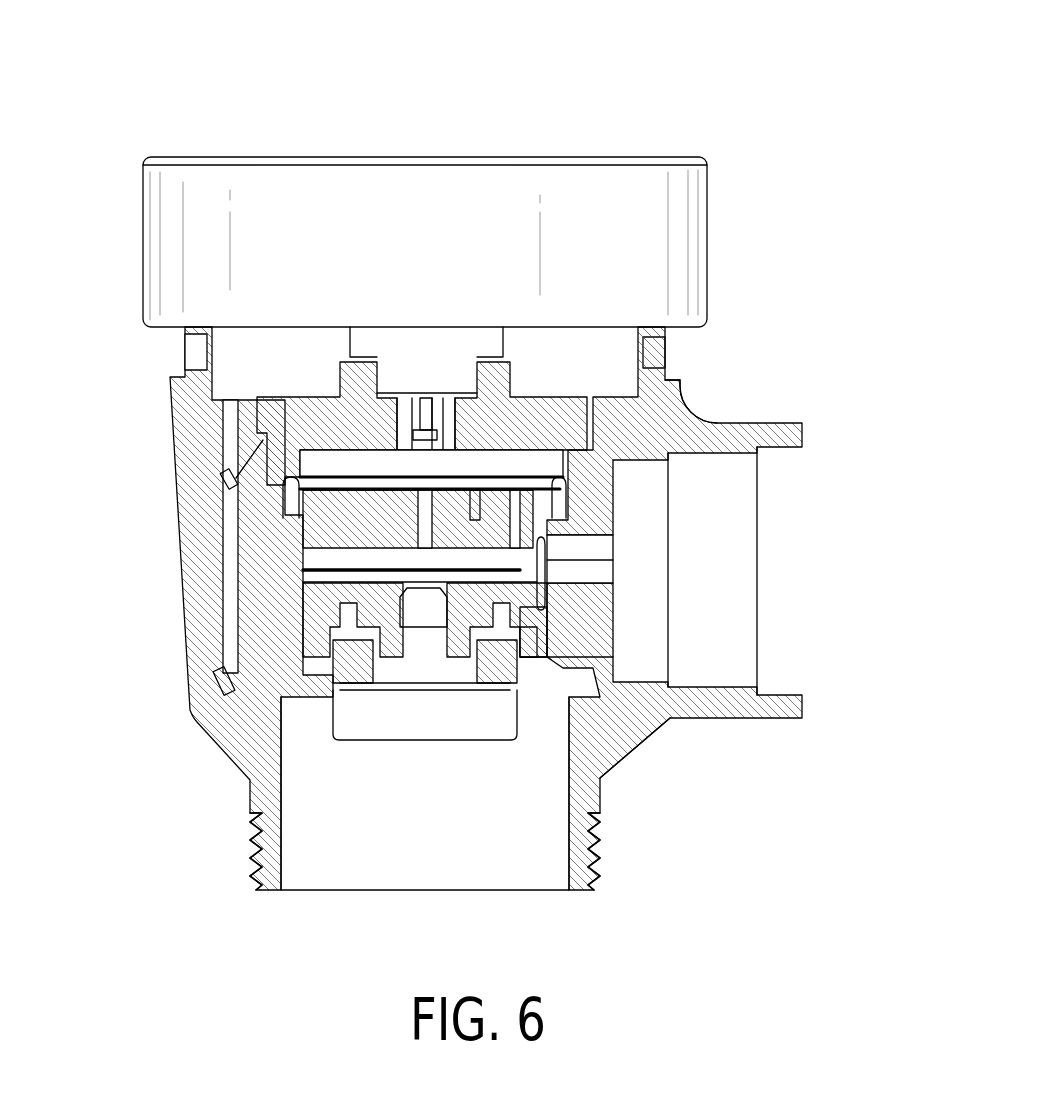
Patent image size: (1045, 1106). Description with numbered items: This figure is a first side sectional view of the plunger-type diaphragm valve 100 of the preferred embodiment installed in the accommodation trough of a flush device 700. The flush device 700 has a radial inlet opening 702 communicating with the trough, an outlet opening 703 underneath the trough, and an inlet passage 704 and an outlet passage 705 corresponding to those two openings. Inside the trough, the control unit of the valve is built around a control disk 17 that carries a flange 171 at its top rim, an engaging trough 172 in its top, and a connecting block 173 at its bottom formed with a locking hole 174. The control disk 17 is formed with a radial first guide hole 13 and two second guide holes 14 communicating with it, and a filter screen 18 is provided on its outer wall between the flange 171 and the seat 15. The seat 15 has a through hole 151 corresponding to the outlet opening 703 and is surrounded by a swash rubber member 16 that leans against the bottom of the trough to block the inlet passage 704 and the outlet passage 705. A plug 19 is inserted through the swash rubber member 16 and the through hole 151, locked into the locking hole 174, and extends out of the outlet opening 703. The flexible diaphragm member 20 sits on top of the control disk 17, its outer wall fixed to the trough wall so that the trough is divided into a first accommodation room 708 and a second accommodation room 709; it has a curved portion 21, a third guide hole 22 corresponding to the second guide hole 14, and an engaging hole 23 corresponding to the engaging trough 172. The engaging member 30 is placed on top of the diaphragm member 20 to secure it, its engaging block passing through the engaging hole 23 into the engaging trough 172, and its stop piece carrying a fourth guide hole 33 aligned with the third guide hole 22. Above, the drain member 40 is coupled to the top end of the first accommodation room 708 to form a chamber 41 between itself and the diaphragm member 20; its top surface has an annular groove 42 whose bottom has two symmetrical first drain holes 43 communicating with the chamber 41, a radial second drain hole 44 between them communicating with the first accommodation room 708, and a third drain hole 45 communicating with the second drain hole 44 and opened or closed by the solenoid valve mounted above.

The plunger-type diaphragm valve 100 is at (478, 482).
The drain member 40 is at (268, 392).
The flush device 700 is at (167, 404).
The inlet opening 702 is at (630, 715).
The outlet opening 703 is at (290, 775).
The inlet passage 704 is at (782, 472).
The outlet passage 705 is at (427, 853).
The first accommodation room 708 is at (222, 478).
The second accommodation room 709 is at (222, 675).
The chamber 41 is at (303, 460).
The annular groove 42 is at (447, 423).
The first drain holes 43 is at (508, 440).
The second drain hole 44 is at (423, 432).
The third drain hole 45 is at (425, 407).
The engaging member 30 is at (481, 492).
The engaging hole 23 is at (600, 433).
The diaphragm member 20 is at (257, 507).
The curved portion 21 is at (265, 471).
The fourth guide hole 33 is at (333, 497).
The third guide hole 22 is at (333, 527).
The second guide hole 14 is at (325, 563).
The first guide hole 13 is at (320, 590).
The filter screen 18 is at (293, 650).
The plug 19 is at (467, 723).
The flange 171 is at (613, 527).
The control disk 17 is at (549, 557).
The engaging trough 172 is at (525, 565).
The connecting block 173 is at (547, 598).
The seat 15 is at (540, 618).
The through hole 151 is at (603, 770).
The swash rubber member 16 is at (600, 815).
The locking hole 174 is at (262, 820).